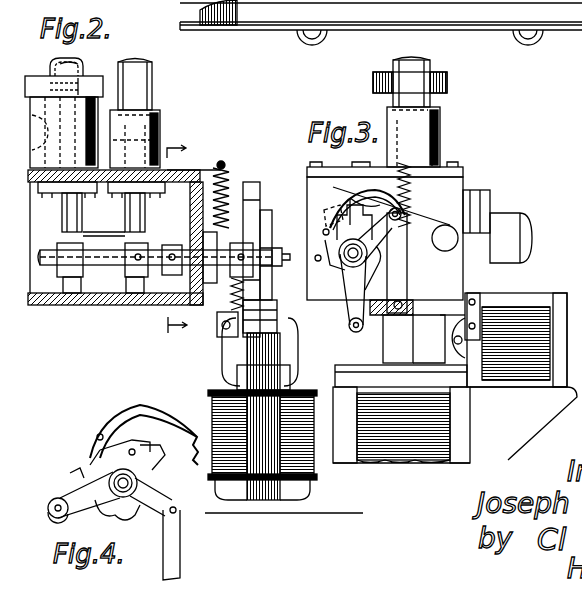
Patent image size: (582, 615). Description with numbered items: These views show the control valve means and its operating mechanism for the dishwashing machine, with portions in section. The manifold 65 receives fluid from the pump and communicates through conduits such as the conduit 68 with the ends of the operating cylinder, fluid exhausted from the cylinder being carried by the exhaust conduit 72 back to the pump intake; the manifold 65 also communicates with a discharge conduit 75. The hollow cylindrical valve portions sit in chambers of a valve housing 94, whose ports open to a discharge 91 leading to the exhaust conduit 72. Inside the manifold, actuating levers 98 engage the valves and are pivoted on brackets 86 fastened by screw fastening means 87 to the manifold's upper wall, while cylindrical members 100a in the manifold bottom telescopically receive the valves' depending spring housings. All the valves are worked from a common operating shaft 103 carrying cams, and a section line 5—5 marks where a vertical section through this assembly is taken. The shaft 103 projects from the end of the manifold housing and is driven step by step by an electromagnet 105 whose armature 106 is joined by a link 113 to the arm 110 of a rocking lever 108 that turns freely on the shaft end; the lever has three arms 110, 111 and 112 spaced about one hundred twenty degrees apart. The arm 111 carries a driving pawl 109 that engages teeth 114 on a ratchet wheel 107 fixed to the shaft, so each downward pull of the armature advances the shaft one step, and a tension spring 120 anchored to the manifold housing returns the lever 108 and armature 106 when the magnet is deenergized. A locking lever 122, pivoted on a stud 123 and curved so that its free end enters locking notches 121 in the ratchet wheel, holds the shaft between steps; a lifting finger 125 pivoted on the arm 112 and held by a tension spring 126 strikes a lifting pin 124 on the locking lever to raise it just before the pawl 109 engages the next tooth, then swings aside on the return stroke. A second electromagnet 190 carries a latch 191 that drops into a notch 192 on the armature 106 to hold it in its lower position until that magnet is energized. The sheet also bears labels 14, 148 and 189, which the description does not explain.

In FIG. 2, the section line 5 is at (186, 237).
In FIG. 2, the frame rail 14 is at (200, 9).
In FIG. 2, the manifold 65 is at (156, 245).
In FIG. 2, the conduit 68 is at (80, 64).
In FIG. 3, the exhaust conduit 72 is at (508, 215).
In FIG. 2, the discharge conduit 75 is at (152, 84).
In FIG. 3, the discharge conduit 75 is at (428, 66).
In FIG. 2, the brackets 86 is at (146, 208).
In FIG. 2, the screw fastening means 87 is at (104, 220).
In FIG. 2, the discharge 91 is at (40, 76).
In FIG. 2, the valve housing 94 is at (88, 80).
In FIG. 3, the valve housing 94 is at (447, 80).
In FIG. 2, the actuating levers 98 is at (62, 208).
In FIG. 2, the cylindrical members 100a is at (85, 275).
In FIG. 2, the operating shaft 103 is at (42, 250).
In FIG. 2, the electromagnet 105 is at (315, 478).
In FIG. 3, the electromagnet 105 is at (410, 462).
In FIG. 2, the armature 106 is at (275, 349).
In FIG. 3, the armature 106 is at (398, 339).
In FIG. 3, the ratchet wheel 107 is at (376, 248).
In FIG. 4, the ratchet wheel 107 is at (133, 499).
In FIG. 3, the actuating member or lever 108 is at (366, 220).
In FIG. 3, the pawl 109 is at (345, 300).
In FIG. 4, the pawl 109 is at (70, 475).
In FIG. 3, the arm 110 is at (402, 216).
In FIG. 3, the arm 111 is at (352, 332).
In FIG. 4, the arm 111 is at (82, 512).
In FIG. 3, the arm 112 is at (323, 231).
In FIG. 4, the arm 112 is at (132, 448).
In FIG. 3, the link 113 is at (407, 274).
In FIG. 4, the link 113 is at (178, 557).
In FIG. 3, the teeth or notches 114 is at (364, 202).
In FIG. 2, the tension spring 120 is at (226, 195).
In FIG. 3, the tension spring 120 is at (408, 188).
In FIG. 3, the locking notches 121 is at (391, 302).
In FIG. 2, the locking lever 122 is at (258, 200).
In FIG. 3, the locking lever 122 is at (340, 190).
In FIG. 4, the locking lever 122 is at (128, 412).
In FIG. 3, the stud 123 is at (445, 228).
In FIG. 3, the lifting pin 124 is at (333, 205).
In FIG. 4, the lifting pin 124 is at (99, 434).
In FIG. 3, the lifting finger 125 is at (315, 258).
In FIG. 4, the lifting finger 125 is at (155, 446).
In FIG. 3, the tension spring 126 is at (352, 266).
In FIG. 4, the tension spring 126 is at (108, 478).
In FIG. 4, the pin 148 is at (170, 498).
In FIG. 2, the armature 189 is at (258, 305).
In FIG. 2, the electromagnet 190 is at (223, 352).
In FIG. 3, the electromagnet 190 is at (524, 312).
In FIG. 3, the latch 191 is at (446, 328).
In FIG. 3, the notch 192 is at (435, 291).